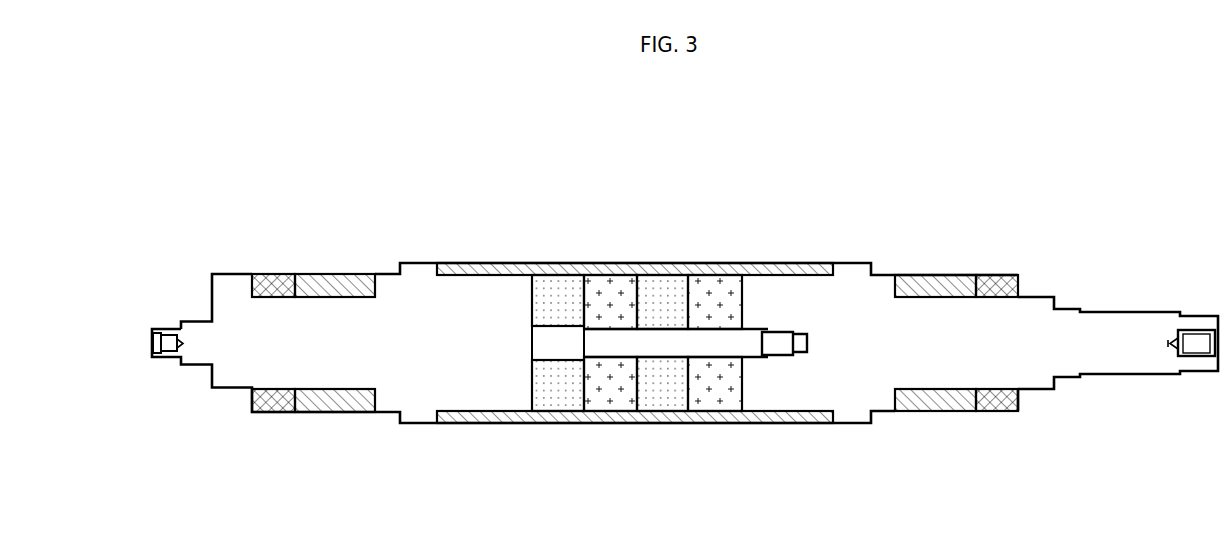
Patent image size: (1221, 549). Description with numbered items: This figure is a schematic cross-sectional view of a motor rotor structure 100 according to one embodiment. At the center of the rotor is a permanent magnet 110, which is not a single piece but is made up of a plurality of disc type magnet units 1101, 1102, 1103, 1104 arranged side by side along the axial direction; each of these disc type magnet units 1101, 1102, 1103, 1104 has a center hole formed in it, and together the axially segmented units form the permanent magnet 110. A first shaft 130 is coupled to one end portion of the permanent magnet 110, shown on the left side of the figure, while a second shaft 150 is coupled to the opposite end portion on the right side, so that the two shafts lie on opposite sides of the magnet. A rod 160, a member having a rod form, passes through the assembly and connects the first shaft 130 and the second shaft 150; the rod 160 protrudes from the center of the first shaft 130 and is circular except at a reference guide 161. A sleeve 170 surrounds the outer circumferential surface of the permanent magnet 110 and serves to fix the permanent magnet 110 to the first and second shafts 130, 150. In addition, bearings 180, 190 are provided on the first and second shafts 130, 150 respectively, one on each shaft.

The motor rotor structure 100 is at (263, 126).
The permanent magnet 110 is at (634, 289).
The disc type magnet unit 1101 is at (543, 285).
The disc type magnet unit 1102 is at (602, 283).
The disc type magnet unit 1103 is at (668, 283).
The disc type magnet unit 1104 is at (719, 309).
The first shaft 130 is at (325, 308).
The second shaft 150 is at (950, 315).
The rod 160 is at (669, 405).
The reference guide 161 is at (558, 363).
The sleeve 170 is at (488, 415).
The bearing 180 is at (326, 403).
The bearing 190 is at (937, 403).